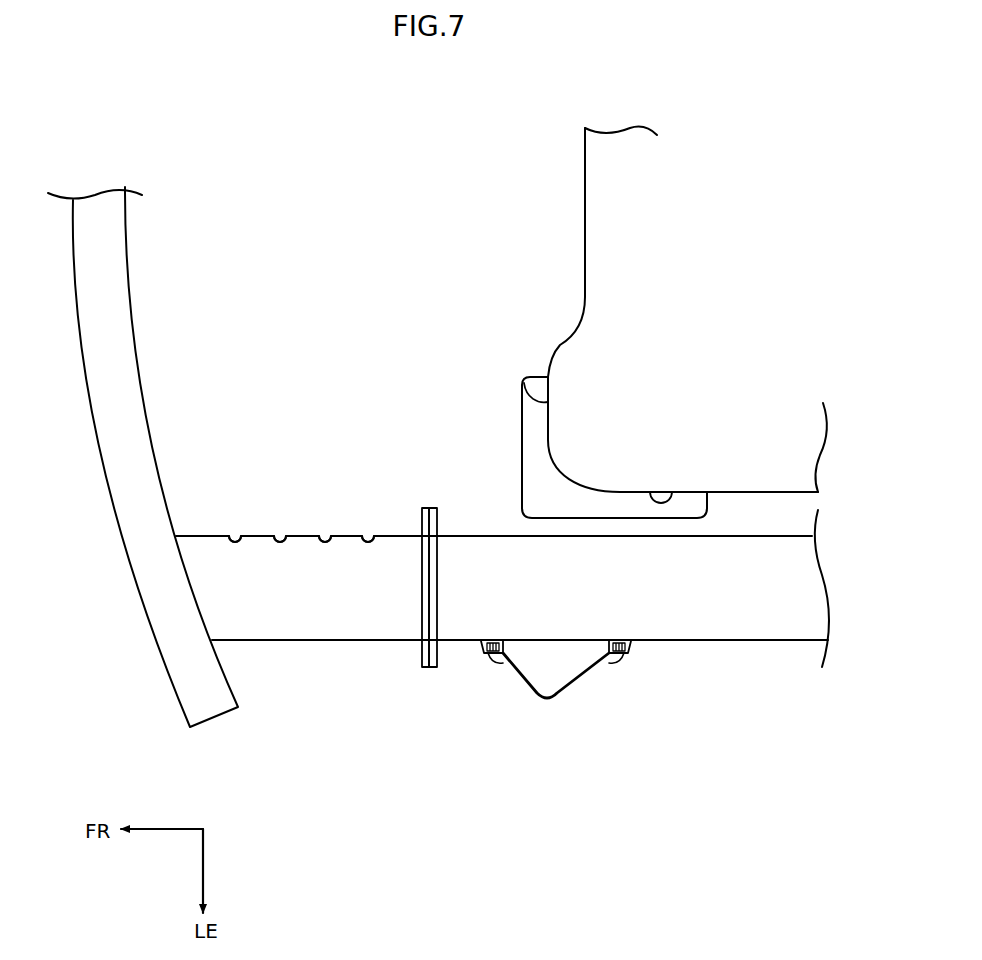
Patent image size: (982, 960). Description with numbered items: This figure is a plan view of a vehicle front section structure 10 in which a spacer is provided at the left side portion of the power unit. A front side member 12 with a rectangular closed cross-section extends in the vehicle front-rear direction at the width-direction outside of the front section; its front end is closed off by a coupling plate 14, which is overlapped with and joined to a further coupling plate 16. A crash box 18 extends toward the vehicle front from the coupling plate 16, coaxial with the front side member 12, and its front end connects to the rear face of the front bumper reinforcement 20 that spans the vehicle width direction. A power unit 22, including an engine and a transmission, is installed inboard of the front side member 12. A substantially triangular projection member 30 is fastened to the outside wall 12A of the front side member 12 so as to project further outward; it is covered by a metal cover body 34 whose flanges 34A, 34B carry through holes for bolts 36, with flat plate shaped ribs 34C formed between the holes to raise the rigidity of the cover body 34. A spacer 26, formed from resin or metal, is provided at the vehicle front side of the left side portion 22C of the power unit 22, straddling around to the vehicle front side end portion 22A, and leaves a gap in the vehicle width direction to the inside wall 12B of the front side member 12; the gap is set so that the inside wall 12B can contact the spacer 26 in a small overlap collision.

The vehicle front section structure 10 is at (538, 762).
The front side member 12 is at (502, 589).
The outside wall 12A is at (700, 641).
The inside wall 12B is at (728, 536).
The coupling plate 14 is at (440, 520).
The coupling plate 16 is at (419, 520).
The crash box 18 is at (300, 555).
The front bumper reinforcement 20 is at (122, 355).
The power unit 22 is at (583, 193).
The vehicle front side end portion 22A is at (523, 378).
The left side portion 22C is at (670, 493).
The spacer 26 is at (535, 454).
The projection member 30 is at (561, 682).
The cover body 34 is at (529, 675).
The flange 34A is at (478, 642).
The flange 34B is at (638, 642).
The rib 34C is at (498, 662).
The bolt 36 is at (487, 656).